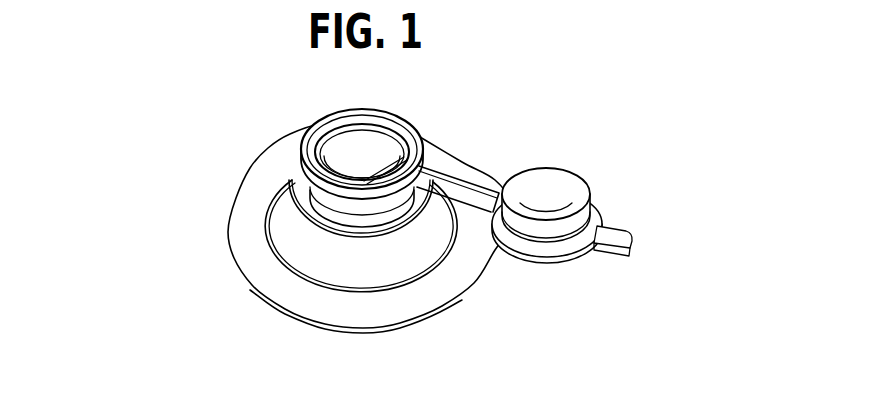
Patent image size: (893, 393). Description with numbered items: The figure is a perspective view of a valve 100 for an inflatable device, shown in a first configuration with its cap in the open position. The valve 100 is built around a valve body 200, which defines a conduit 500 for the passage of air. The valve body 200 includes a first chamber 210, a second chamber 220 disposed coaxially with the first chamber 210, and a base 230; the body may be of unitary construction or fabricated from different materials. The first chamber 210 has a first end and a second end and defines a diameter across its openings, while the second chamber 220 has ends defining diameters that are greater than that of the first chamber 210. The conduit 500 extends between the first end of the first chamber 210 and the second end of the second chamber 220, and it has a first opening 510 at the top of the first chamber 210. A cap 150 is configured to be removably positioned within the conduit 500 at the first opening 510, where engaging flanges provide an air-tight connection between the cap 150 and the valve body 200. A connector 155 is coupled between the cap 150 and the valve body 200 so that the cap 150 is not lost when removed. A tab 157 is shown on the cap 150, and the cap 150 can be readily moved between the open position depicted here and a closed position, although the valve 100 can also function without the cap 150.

The valve 100 is at (192, 142).
The valve body 200 is at (238, 237).
The second chamber 220 is at (428, 250).
The base 230 is at (453, 292).
The first chamber 210 is at (434, 142).
The first opening 510 is at (325, 112).
The conduit 500 is at (367, 158).
The cap 150 is at (603, 222).
The connector 155 is at (473, 192).
The pull tab 157 is at (637, 249).